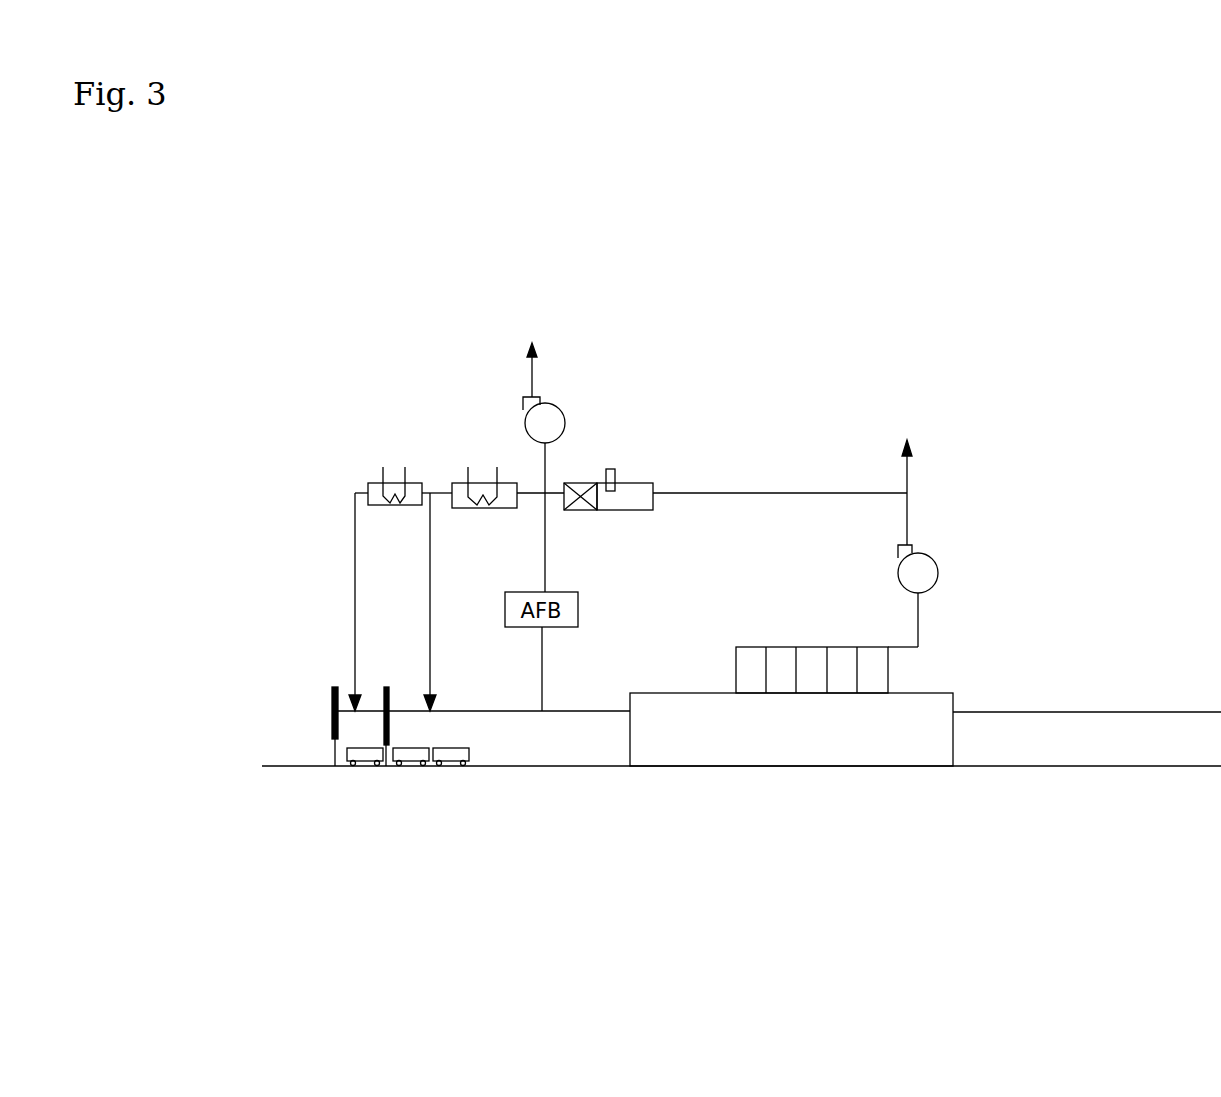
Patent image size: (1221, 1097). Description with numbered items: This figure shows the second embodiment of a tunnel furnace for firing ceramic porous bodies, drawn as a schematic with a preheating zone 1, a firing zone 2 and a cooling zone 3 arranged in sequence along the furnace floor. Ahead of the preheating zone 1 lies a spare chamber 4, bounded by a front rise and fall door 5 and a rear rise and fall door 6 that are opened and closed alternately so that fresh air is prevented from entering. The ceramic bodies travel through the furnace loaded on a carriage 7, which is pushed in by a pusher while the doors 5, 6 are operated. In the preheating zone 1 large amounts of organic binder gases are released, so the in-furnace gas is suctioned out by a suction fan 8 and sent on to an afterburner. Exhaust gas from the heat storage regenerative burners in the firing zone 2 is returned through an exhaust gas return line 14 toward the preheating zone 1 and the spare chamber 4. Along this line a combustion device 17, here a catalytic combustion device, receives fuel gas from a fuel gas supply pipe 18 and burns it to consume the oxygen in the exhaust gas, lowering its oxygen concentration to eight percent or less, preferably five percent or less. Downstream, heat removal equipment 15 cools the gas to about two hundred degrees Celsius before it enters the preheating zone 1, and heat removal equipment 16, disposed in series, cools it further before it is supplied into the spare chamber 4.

The preheating zone 1 is at (474, 726).
The firing zone 2 is at (669, 718).
The cooling zone 3 is at (1047, 733).
The spare chamber 4 is at (370, 729).
The rise and fall door 5 is at (332, 698).
The rise and fall door 6 is at (390, 698).
The carriage 7 is at (449, 767).
The suction fan 8 is at (523, 432).
The exhaust gas return line 14 is at (775, 490).
The heat removal equipment 15 is at (480, 508).
The heat removal equipment 16 is at (374, 488).
The combustion device 17 is at (645, 490).
The fuel gas supply pipe 18 is at (616, 470).